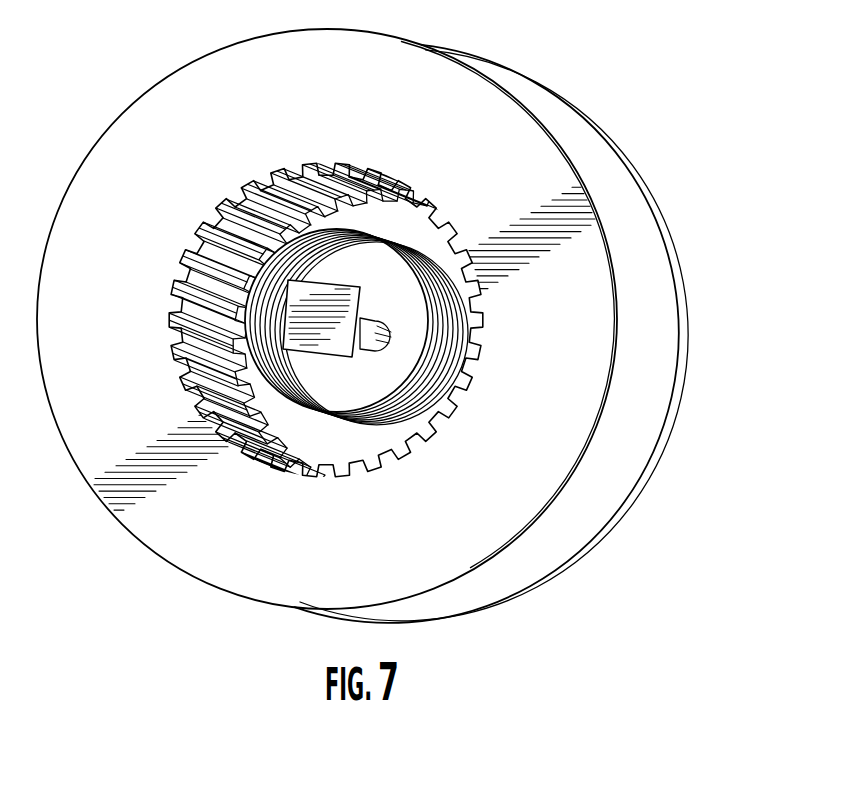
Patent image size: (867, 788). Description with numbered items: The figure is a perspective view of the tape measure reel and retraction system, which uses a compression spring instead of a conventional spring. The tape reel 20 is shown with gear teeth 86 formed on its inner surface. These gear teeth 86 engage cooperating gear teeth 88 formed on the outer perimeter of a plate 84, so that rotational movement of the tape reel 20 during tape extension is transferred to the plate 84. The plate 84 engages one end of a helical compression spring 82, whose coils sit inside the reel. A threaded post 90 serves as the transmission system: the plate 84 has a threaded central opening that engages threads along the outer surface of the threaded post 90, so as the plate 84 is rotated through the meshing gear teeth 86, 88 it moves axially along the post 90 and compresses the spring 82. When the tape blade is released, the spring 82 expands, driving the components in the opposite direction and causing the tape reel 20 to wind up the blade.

The tape reel 20 is at (546, 179).
The helical compression spring 82 is at (427, 319).
The plate 84 is at (377, 438).
The gear teeth 86 is at (326, 303).
The cooperating gear teeth 88 is at (285, 228).
The threaded post 90 is at (392, 335).